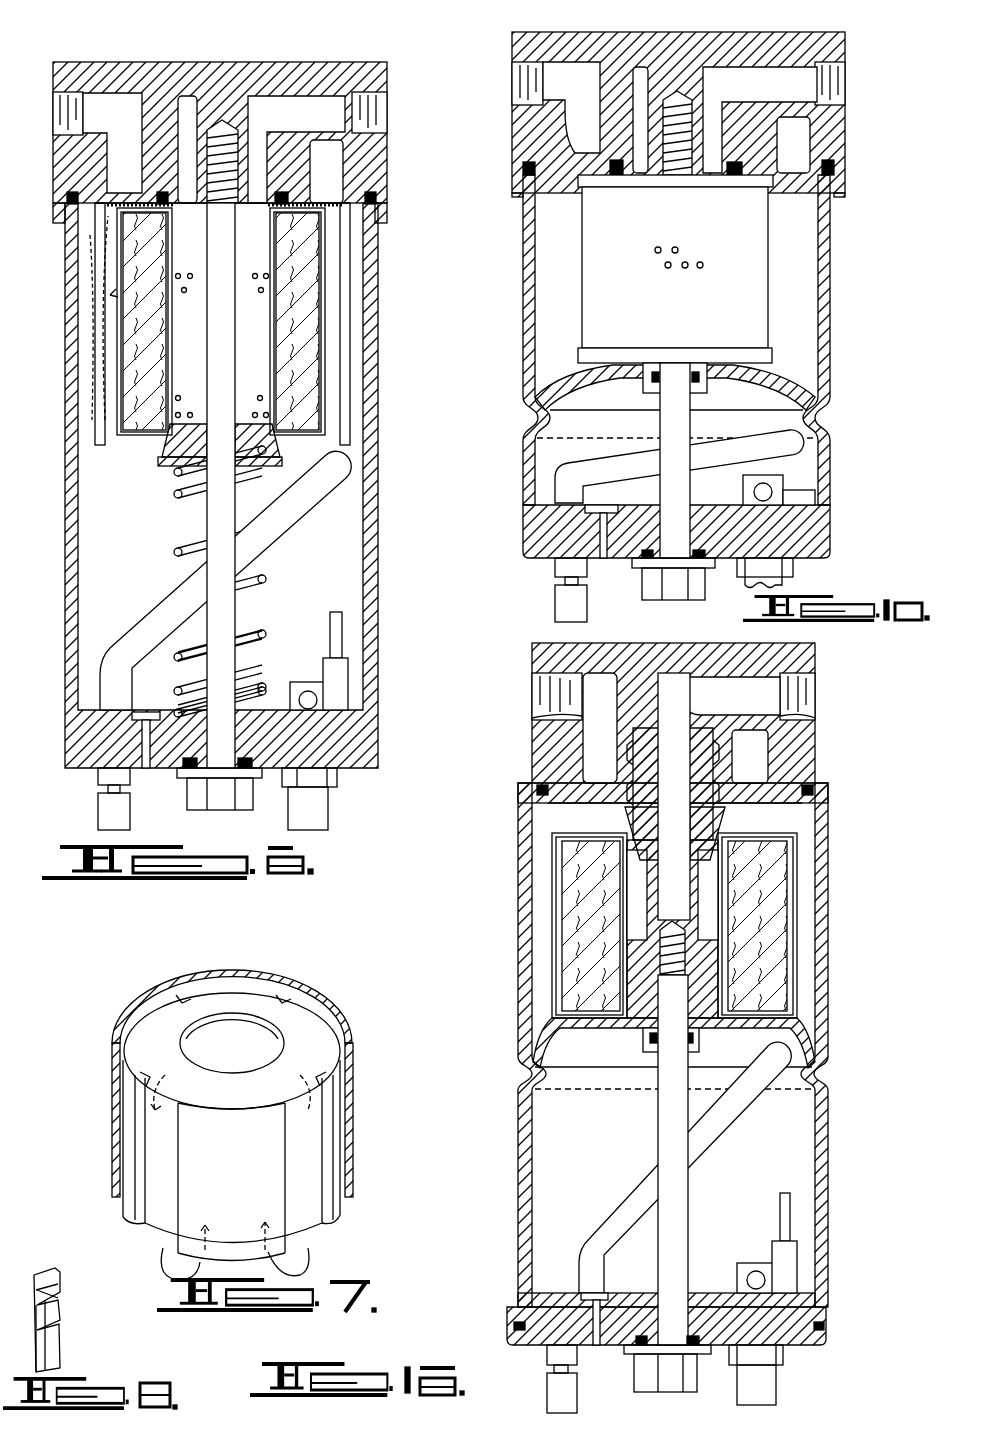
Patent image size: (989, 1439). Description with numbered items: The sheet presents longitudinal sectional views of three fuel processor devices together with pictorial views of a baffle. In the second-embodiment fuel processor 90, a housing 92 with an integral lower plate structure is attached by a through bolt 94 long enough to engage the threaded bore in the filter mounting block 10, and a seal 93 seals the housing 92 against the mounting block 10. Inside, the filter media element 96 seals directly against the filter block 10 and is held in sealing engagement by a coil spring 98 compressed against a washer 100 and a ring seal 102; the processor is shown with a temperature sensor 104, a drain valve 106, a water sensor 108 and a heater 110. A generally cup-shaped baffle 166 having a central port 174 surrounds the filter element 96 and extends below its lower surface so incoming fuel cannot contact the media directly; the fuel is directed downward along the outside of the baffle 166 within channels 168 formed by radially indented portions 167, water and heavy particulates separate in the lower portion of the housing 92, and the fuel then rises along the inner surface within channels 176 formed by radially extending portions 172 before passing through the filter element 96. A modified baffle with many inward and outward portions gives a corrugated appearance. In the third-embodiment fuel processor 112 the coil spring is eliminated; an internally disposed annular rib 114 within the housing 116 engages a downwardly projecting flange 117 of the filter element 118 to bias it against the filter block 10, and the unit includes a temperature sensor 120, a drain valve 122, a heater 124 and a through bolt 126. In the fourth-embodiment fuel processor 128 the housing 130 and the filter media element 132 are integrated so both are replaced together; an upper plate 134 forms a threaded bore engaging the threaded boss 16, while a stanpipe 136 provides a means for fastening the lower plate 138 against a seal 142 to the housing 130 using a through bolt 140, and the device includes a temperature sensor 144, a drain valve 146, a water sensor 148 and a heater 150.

In FIG. 6, the filter mounting block 10 is at (290, 63).
In FIG. 10, the filter mounting block 10 is at (815, 53).
In FIG. 12, the filter mounting block 10 is at (790, 660).
In FIG. 12, the threaded boss 16 is at (707, 812).
In FIG. 6, the fuel processor device 90 is at (233, 485).
In FIG. 6, the housing 92 is at (366, 348).
In FIG. 6, the seal 93 is at (372, 199).
In FIG. 6, the through bolt 94 is at (215, 512).
In FIG. 6, the filter media element 96 is at (292, 308).
In FIG. 6, the coil spring 98 is at (264, 578).
In FIG. 6, the washer 100 is at (172, 462).
In FIG. 6, the ring seal 102 is at (300, 438).
In FIG. 6, the temperature sensor 104 is at (146, 710).
In FIG. 6, the drain valve 106 is at (327, 697).
In FIG. 6, the water sensor 108 is at (342, 638).
In FIG. 6, the heater 110 is at (345, 483).
In FIG. 10, the fuel processor 112 is at (683, 398).
In FIG. 10, the annular rib 114 is at (818, 400).
In FIG. 10, the housing 116 is at (828, 372).
In FIG. 10, the downwardly projecting flange 117 is at (540, 406).
In FIG. 10, the filter element 118 is at (762, 279).
In FIG. 10, the temperature sensor 120 is at (604, 505).
In FIG. 10, the drain valve 122 is at (788, 495).
In FIG. 10, the heater 124 is at (802, 450).
In FIG. 10, the through bolt 126 is at (692, 540).
In FIG. 12, the fuel processor 128 is at (668, 1043).
In FIG. 12, the housing 130 is at (828, 1042).
In FIG. 12, the filter media element 132 is at (797, 890).
In FIG. 12, the upper plate 134 is at (727, 822).
In FIG. 12, the stanpipe 136 is at (630, 990).
In FIG. 12, the lower plate 138 is at (530, 1345).
In FIG. 12, the through bolt 140 is at (688, 1178).
In FIG. 12, the seal 142 is at (510, 1325).
In FIG. 12, the temperature sensor 144 is at (600, 1295).
In FIG. 12, the drain valve 146 is at (732, 1265).
In FIG. 12, the water sensor 148 is at (790, 1212).
In FIG. 12, the heater 150 is at (828, 1070).
In FIG. 6, the baffle 166 is at (336, 396).
In FIG. 7, the baffle 166 is at (293, 1015).
In FIG. 7, the indented portions 167 is at (305, 1142).
In FIG. 6, the channels 168 is at (336, 262).
In FIG. 7, the channels 168 is at (145, 1010).
In FIG. 6, the radially extending portions 172 is at (342, 240).
In FIG. 7, the radially extending portions 172 is at (338, 1102).
In FIG. 6, the central port 174 is at (270, 203).
In FIG. 7, the central port 174 is at (232, 1030).
In FIG. 7, the channels 176 is at (330, 1222).